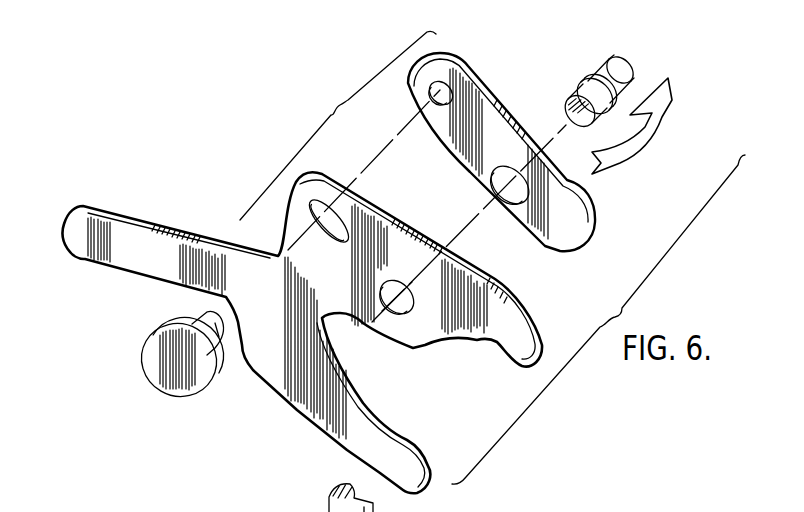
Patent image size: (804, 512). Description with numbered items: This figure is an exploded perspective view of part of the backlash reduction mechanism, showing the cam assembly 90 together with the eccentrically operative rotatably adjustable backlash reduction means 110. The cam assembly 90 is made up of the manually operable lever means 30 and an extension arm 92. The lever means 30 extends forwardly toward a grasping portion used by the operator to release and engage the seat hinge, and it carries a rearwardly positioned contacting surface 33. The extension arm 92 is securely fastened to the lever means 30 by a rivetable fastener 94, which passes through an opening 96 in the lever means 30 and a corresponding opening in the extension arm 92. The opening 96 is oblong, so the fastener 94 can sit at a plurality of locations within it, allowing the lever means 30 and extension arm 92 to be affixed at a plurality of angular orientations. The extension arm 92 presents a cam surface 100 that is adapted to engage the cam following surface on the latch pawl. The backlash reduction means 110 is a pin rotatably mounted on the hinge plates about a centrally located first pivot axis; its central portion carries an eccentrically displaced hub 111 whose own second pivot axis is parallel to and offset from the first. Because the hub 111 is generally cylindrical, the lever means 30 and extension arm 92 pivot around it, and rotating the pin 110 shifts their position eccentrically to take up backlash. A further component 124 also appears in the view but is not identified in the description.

The manually operable lever means 30 is at (115, 233).
The contacting surface 33 is at (524, 360).
The cam assembly 90 is at (492, 257).
The extension arm 92 is at (557, 243).
The rivetable fastener 94 is at (196, 385).
The opening 96 is at (345, 243).
The cam surface 100 is at (596, 200).
The eccentrically operative rotatably adjustable backlash reduction means 110 is at (588, 84).
The eccentrically displaced hub 111 is at (613, 67).
The post 124 is at (329, 502).